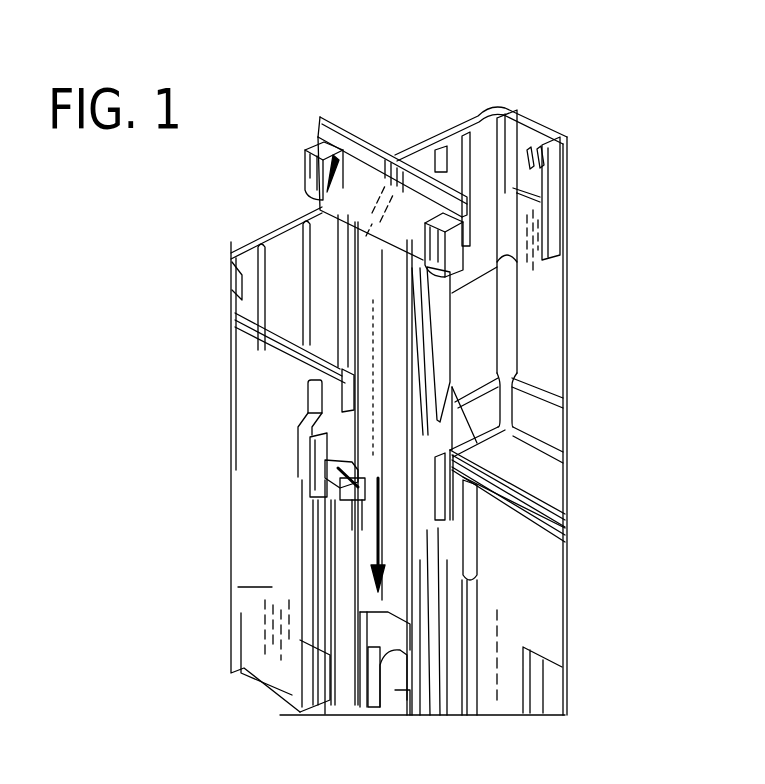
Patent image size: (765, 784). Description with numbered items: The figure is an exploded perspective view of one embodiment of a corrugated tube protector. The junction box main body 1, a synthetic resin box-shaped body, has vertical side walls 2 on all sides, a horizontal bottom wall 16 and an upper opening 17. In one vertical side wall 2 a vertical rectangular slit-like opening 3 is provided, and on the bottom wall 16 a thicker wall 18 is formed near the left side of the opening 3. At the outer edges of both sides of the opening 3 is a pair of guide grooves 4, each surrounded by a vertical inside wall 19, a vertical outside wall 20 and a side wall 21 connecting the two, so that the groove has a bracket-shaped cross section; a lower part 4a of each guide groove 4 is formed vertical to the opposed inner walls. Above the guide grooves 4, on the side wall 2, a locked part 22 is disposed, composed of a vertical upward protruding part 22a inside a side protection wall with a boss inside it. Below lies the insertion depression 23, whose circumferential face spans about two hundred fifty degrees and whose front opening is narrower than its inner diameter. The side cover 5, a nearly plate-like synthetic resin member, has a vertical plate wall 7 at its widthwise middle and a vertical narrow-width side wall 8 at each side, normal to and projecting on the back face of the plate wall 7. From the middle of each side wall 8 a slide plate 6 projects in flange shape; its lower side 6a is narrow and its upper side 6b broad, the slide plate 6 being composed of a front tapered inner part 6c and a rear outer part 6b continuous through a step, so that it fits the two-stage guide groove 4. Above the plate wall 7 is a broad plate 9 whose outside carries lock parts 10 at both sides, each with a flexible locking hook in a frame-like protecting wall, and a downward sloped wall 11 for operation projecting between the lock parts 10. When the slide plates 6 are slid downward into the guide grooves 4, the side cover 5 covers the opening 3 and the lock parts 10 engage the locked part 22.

The junction box main body 1 is at (603, 352).
The vertical side wall 2 is at (270, 587).
The opening 3 is at (402, 677).
The guide groove 4 is at (360, 550).
The lower part of the guide groove 4a is at (387, 668).
The side cover 5 is at (389, 120).
The slide plate 6 is at (338, 316).
The lower side of the slide plate 6a is at (490, 488).
The upper side of the slide plate 6b is at (452, 316).
The front tapered inner part 6c is at (455, 402).
The plate wall 7 is at (380, 378).
The side wall 8 is at (420, 315).
The broad plate 9 is at (358, 155).
The lock part 10 is at (306, 150).
The sloped wall 11 is at (355, 205).
The bottom wall 16 is at (500, 626).
The upper opening 17 is at (485, 110).
The thicker wall 18 is at (380, 632).
The vertical inside wall 19 is at (337, 493).
The vertical outside wall 20 is at (362, 535).
The side wall 21 is at (347, 518).
The locked part 22 is at (308, 450).
The protruding part 22a is at (320, 466).
The insertion depression 23 is at (400, 690).